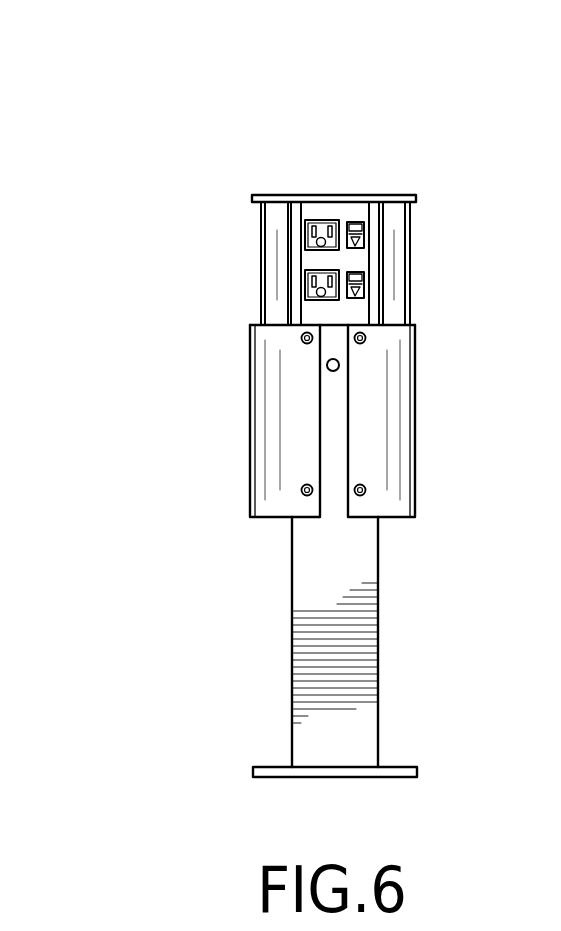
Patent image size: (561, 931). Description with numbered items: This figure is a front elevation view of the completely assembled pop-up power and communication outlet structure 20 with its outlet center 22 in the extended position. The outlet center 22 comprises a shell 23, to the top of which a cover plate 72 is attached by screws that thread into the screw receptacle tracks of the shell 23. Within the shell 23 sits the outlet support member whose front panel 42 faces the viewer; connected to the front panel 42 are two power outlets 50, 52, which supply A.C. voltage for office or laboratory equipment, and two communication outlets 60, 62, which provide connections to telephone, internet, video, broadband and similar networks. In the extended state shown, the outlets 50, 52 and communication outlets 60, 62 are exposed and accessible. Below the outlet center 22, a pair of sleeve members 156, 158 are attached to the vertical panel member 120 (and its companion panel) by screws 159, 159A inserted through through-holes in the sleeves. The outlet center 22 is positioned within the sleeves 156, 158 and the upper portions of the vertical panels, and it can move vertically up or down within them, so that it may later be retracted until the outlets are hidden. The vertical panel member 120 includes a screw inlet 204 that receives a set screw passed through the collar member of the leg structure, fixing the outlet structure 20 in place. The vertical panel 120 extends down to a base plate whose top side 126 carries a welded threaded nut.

The power and communication outlet structure 20 is at (183, 138).
The cover plate 72 is at (310, 195).
The shell 23 is at (260, 268).
The outlet center 22 is at (400, 272).
The front panel 42 is at (358, 312).
The outlet 50 is at (305, 232).
The outlet 52 is at (305, 287).
The communication outlet 60 is at (364, 231).
The communication outlet 62 is at (363, 271).
The sleeve member 156 is at (260, 418).
The sleeve member 158 is at (398, 428).
The screw 159A is at (301, 338).
The screw 159 is at (301, 490).
The screw inlet 204 is at (340, 365).
The vertical panel member 120 is at (307, 656).
The top side 126 is at (401, 769).